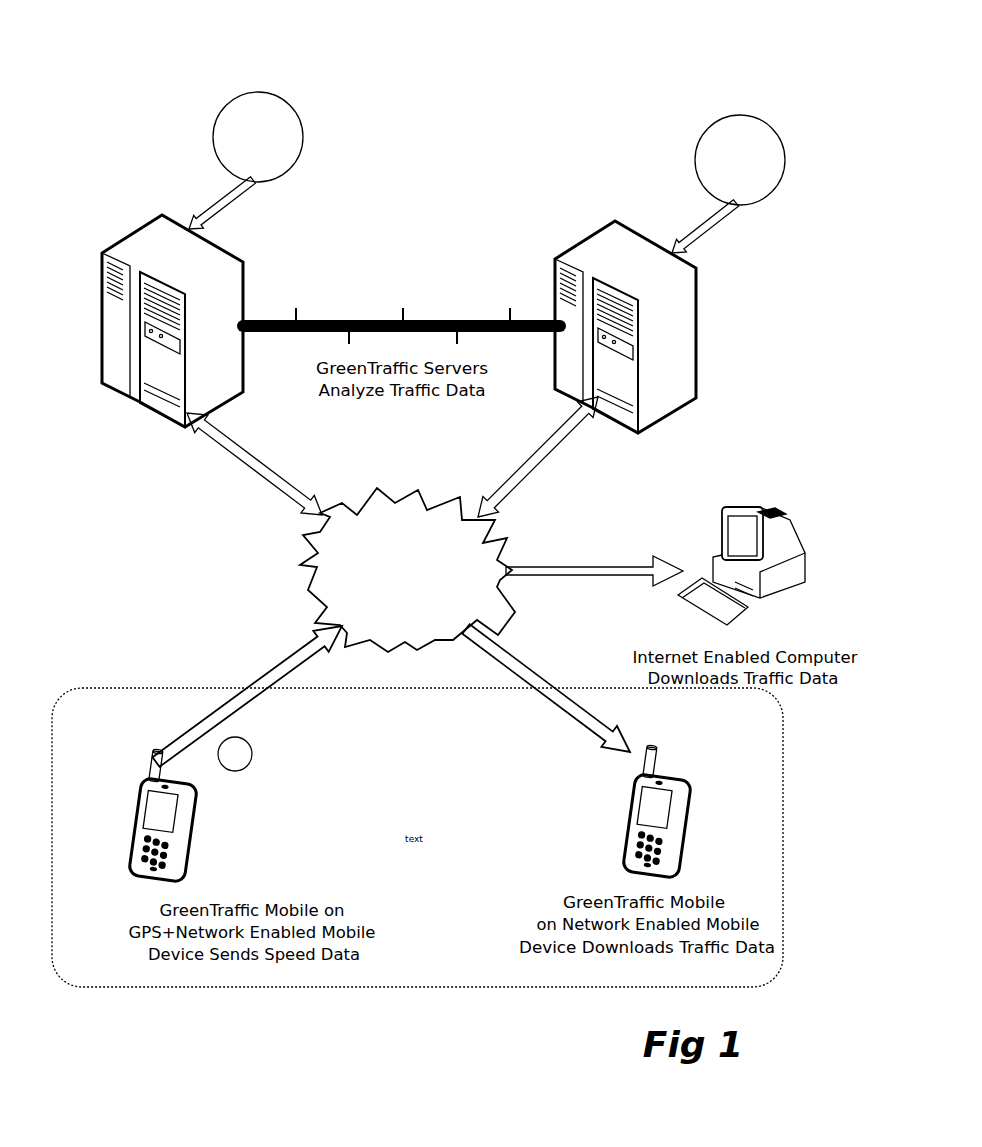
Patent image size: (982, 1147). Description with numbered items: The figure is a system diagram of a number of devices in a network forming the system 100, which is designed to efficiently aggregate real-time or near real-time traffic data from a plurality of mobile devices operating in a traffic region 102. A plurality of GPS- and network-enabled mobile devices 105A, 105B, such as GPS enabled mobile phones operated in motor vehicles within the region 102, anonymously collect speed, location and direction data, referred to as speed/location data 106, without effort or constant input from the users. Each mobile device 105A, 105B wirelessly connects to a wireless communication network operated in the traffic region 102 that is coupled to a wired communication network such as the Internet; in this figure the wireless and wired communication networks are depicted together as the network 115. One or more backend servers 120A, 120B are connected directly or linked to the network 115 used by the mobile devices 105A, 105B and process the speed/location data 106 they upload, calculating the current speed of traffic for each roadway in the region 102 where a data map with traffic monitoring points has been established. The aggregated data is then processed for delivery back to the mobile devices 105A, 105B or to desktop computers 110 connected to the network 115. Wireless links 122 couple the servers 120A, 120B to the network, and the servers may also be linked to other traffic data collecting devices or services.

The system 100 is at (569, 72).
The traffic region 102 is at (780, 855).
The GPS- and network-enabled mobile device 105A is at (132, 797).
The GPS- and network-enabled mobile device 105B is at (626, 844).
The speed/location data 106 is at (252, 753).
The desktop computer 110 is at (718, 542).
The network 115 is at (300, 593).
The backend server 120A is at (108, 246).
The backend server 120B is at (550, 255).
The wireless communication network 122 is at (220, 147).